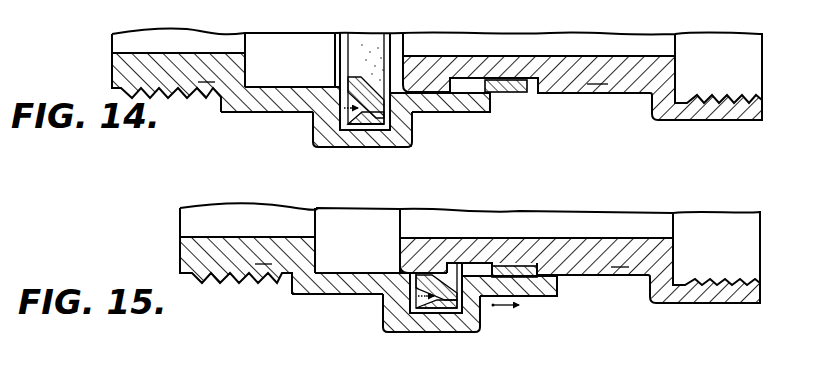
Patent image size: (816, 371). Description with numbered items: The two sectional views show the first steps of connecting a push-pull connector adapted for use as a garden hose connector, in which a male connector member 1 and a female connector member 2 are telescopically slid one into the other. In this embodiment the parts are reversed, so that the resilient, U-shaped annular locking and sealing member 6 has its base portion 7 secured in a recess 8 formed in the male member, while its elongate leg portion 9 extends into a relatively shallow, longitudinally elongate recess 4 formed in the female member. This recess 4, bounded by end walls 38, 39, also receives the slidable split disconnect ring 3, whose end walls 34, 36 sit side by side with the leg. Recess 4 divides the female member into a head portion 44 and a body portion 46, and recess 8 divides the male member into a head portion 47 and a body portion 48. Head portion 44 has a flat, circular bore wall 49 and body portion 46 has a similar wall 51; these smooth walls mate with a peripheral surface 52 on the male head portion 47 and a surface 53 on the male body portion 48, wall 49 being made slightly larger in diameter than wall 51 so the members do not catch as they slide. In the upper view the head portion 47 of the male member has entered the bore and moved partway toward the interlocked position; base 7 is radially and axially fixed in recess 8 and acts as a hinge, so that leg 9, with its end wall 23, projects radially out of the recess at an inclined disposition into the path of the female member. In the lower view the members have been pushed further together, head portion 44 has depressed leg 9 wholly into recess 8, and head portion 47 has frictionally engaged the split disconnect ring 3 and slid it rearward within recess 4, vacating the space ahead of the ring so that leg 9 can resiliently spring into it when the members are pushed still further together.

In FIG. 14, the male connector member 1 is at (301, 88).
In FIG. 15, the male connector member 1 is at (368, 267).
In FIG. 14, the female connector member 2 is at (582, 76).
In FIG. 15, the female connector member 2 is at (580, 256).
In FIG. 14, the disconnect ring 3 is at (513, 94).
In FIG. 15, the disconnect ring 3 is at (525, 264).
In FIG. 14, the recess 4 is at (470, 78).
In FIG. 14, the annular locking and sealing member 6 is at (345, 133).
In FIG. 14, the base portion 7 is at (362, 130).
In FIG. 15, the base portion 7 is at (434, 313).
In FIG. 14, the recess 8 is at (338, 115).
In FIG. 15, the recess 8 is at (395, 331).
In FIG. 14, the elongate leg portion 9 is at (355, 75).
In FIG. 15, the elongate leg portion 9 is at (406, 289).
In FIG. 15, the end wall 23 is at (498, 338).
In FIG. 14, the end wall 34 is at (531, 86).
In FIG. 14, the end wall 36 is at (490, 79).
In FIG. 15, the end wall 36 is at (541, 263).
In FIG. 14, the end wall 38 is at (552, 76).
In FIG. 15, the end wall 38 is at (566, 273).
In FIG. 14, the end wall 39 is at (473, 78).
In FIG. 15, the end wall 39 is at (447, 259).
In FIG. 14, the head portion 44 is at (452, 90).
In FIG. 15, the head portion 44 is at (424, 259).
In FIG. 14, the body portion 46 is at (578, 78).
In FIG. 15, the body portion 46 is at (592, 252).
In FIG. 14, the head portion 47 is at (447, 100).
In FIG. 15, the head portion 47 is at (537, 297).
In FIG. 14, the body portion 48 is at (267, 110).
In FIG. 15, the body portion 48 is at (340, 288).
In FIG. 14, the bore wall 49 is at (428, 91).
In FIG. 14, the bore wall 51 is at (627, 93).
In FIG. 15, the bore wall 51 is at (607, 275).
In FIG. 14, the peripheral surface 52 is at (474, 112).
In FIG. 15, the peripheral surface 52 is at (547, 297).
In FIG. 14, the surface 53 is at (307, 68).
In FIG. 15, the surface 53 is at (350, 273).